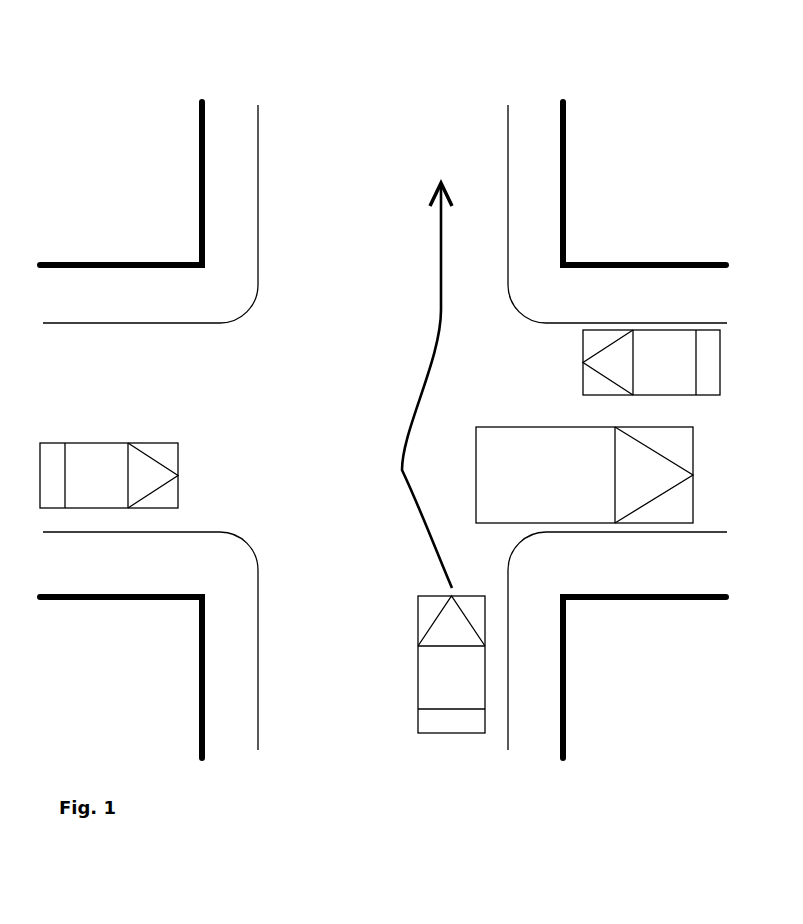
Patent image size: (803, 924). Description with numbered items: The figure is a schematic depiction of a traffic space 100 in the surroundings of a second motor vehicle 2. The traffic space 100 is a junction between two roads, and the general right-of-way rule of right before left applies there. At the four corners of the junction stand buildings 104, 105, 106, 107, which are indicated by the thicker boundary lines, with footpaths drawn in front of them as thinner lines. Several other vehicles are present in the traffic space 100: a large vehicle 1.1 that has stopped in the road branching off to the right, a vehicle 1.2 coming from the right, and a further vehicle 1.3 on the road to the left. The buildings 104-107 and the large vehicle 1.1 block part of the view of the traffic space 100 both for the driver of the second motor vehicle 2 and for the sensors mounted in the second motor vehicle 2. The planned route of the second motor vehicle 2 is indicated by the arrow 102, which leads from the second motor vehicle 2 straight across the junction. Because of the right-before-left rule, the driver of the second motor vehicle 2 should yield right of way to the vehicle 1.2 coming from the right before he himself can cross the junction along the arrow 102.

The traffic space 100 is at (332, 75).
The arrow 102 is at (426, 385).
The building 104 is at (121, 183).
The building 105 is at (644, 183).
The building 106 is at (644, 677).
The building 107 is at (121, 677).
The second motor vehicle 2 is at (451, 664).
The large vehicle 1.1 is at (584, 475).
The vehicle 1.2 is at (651, 362).
The vehicle 1.3 is at (109, 475).